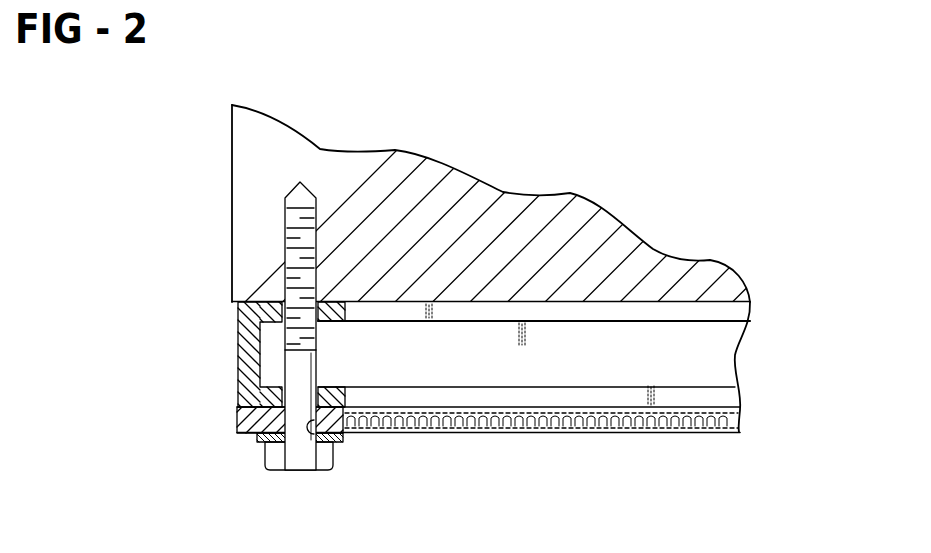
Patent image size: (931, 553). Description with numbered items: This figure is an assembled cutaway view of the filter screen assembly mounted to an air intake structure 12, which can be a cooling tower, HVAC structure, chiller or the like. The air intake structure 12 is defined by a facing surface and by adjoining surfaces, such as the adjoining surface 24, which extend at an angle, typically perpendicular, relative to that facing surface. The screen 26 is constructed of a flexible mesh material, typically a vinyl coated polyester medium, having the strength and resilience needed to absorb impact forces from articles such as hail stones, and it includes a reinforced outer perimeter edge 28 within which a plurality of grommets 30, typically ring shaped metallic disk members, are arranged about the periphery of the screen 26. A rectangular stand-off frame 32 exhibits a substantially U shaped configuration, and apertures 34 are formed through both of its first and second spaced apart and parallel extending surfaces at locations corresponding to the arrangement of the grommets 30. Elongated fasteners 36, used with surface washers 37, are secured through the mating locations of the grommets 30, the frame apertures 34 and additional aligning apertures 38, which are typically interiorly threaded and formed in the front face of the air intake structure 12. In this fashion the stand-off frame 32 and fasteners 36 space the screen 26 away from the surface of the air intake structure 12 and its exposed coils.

The air intake structure 12 is at (386, 151).
The adjoining surface 24 is at (232, 205).
The screen 26 is at (462, 429).
The reinforced outer perimeter edge 28 is at (237, 418).
The grommet 30 is at (253, 356).
The stand-off frame 32 is at (238, 350).
The aperture 34 is at (316, 312).
The elongated fastener 36 is at (288, 470).
The surface washer 37 is at (347, 435).
The aligning aperture 38 is at (284, 242).